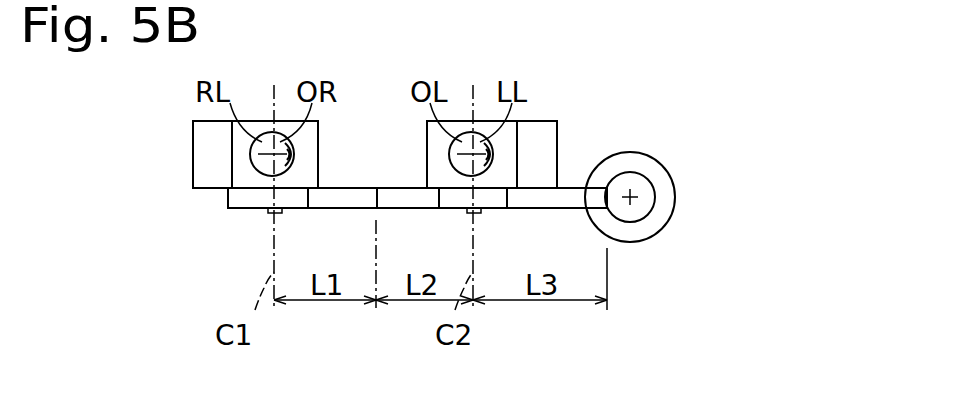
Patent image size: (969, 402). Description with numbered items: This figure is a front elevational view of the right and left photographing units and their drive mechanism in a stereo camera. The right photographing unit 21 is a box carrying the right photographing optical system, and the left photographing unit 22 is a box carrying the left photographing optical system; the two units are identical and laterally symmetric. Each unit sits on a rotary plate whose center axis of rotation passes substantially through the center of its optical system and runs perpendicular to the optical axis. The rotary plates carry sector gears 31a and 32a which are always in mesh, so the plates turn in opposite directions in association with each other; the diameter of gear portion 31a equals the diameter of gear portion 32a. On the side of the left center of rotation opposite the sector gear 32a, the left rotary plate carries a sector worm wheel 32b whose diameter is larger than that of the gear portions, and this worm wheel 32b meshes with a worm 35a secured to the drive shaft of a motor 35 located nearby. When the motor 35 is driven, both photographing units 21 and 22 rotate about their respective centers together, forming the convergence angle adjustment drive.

The right photographing unit 21 is at (200, 128).
The left photographing unit 22 is at (557, 132).
The sector gear 31a is at (325, 203).
The sector gear 32a is at (425, 203).
The sector worm wheel 32b is at (552, 205).
The motor 35 is at (670, 172).
The worm 35a is at (647, 198).